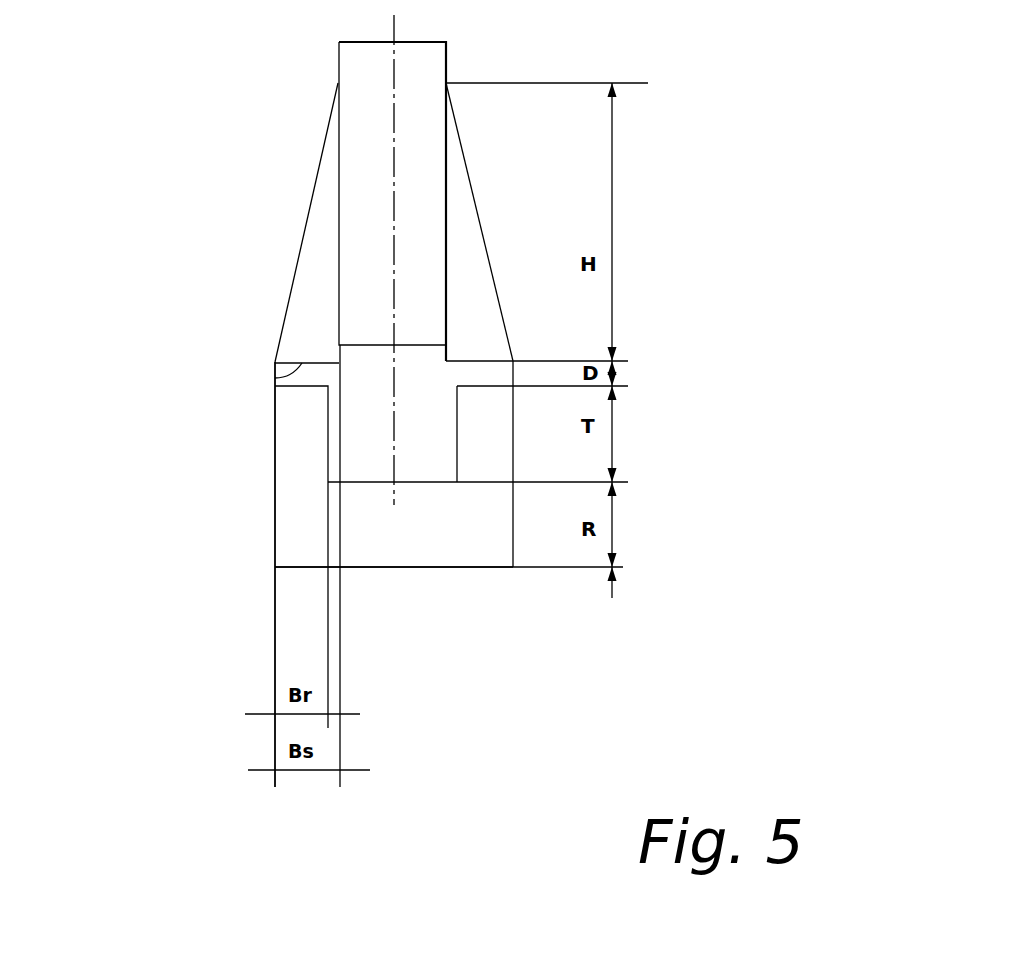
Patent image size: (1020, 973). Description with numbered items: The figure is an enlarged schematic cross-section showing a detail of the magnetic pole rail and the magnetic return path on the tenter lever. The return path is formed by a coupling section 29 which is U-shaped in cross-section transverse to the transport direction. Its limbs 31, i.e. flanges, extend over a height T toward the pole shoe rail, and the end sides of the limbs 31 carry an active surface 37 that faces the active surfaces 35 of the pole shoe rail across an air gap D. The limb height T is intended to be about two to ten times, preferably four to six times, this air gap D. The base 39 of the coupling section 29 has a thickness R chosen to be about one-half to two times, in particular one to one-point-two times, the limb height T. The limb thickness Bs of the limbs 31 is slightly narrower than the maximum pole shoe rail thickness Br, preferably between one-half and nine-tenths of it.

The coupling section 29 is at (232, 470).
The limbs 31 is at (288, 420).
The active surfaces 35 is at (272, 377).
The active surface 37 is at (493, 381).
The base 39 is at (440, 548).